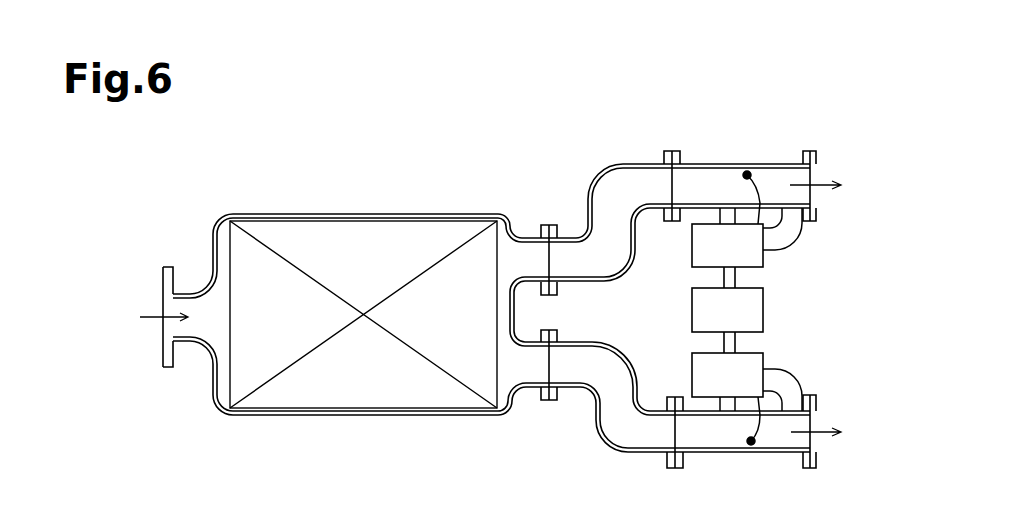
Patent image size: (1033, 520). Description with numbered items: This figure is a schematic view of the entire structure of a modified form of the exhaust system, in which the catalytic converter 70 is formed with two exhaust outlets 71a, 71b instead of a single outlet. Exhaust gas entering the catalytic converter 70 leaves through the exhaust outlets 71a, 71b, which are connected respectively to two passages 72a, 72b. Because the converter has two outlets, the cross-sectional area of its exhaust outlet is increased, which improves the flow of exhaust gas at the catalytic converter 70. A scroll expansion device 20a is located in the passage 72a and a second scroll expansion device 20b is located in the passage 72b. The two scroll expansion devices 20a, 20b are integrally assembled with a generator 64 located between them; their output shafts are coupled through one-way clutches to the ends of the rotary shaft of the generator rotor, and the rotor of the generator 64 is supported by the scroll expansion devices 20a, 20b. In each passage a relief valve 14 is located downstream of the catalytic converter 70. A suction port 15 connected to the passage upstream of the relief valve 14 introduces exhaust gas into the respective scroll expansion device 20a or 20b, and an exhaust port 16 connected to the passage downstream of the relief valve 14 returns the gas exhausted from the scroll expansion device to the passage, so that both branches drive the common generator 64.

The catalytic converter 70 is at (325, 413).
The exhaust outlet 71a is at (531, 246).
The exhaust outlet 71b is at (534, 386).
The passage 72a is at (711, 163).
The passage 72b is at (717, 453).
The relief valve 14 is at (748, 172).
The suction port 15 is at (721, 207).
The exhaust port 16 is at (785, 238).
The scroll expansion device 20a is at (690, 262).
The scroll expansion device 20b is at (692, 360).
The generator 64 is at (765, 308).